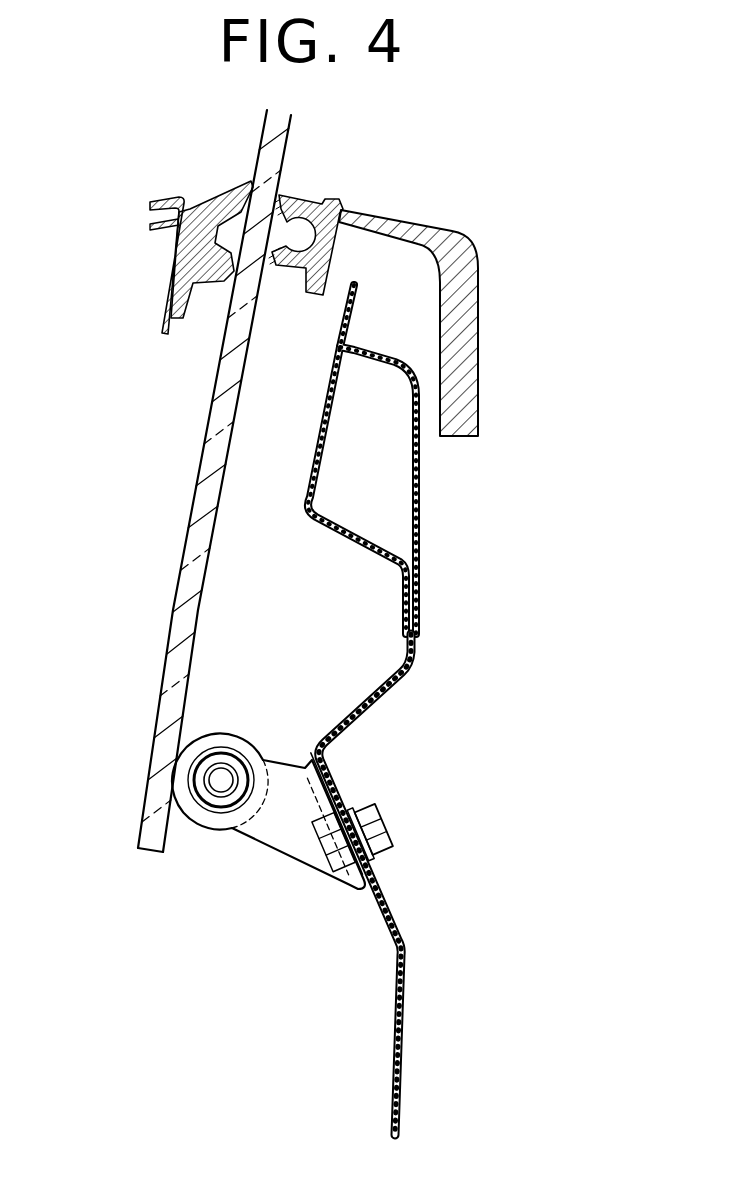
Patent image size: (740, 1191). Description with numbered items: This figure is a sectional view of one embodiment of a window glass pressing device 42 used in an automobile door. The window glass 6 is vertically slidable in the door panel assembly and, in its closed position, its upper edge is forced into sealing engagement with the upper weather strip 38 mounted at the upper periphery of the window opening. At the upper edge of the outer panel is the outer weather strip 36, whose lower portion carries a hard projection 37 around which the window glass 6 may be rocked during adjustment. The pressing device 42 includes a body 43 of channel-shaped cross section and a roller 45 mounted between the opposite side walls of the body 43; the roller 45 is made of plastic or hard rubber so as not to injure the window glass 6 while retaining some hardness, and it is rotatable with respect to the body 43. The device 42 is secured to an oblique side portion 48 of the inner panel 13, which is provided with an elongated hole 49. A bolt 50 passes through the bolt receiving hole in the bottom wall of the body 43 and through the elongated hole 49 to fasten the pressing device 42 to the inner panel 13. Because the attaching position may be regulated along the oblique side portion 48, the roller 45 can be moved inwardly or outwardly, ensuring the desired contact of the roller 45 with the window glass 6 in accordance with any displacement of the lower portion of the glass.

The window glass 6 is at (200, 472).
The inner panel 13 is at (323, 433).
The outer weather strip 36 is at (219, 207).
The hard projection 37 is at (216, 283).
The upper weather strip 38 is at (330, 200).
The window pressing device 42 is at (280, 868).
The body 43 is at (258, 838).
The roller 45 is at (238, 738).
The oblique side portion 48 is at (402, 927).
The elongated hole 49 is at (337, 803).
The bolt 50 is at (374, 828).